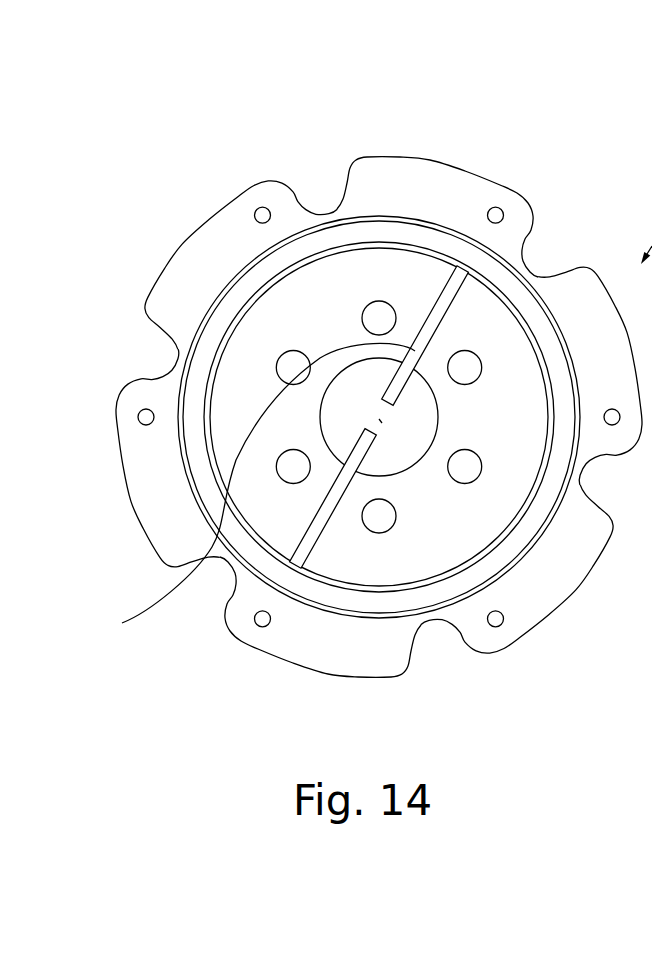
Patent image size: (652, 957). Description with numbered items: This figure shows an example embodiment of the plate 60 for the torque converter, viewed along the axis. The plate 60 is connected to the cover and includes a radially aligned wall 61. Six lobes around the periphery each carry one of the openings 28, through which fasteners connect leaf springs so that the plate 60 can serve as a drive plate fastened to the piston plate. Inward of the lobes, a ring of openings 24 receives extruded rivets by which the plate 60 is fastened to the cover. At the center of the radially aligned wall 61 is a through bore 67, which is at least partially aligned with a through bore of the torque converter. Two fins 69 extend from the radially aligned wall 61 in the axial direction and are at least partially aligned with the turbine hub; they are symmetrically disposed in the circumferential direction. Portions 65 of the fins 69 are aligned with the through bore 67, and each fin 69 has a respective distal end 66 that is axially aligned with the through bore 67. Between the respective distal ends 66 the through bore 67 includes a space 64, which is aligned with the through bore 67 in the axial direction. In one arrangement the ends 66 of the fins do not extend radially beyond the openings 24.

The plate 60 is at (139, 125).
The openings 28 is at (261, 208).
The radially aligned wall 61 is at (277, 303).
The openings 24 is at (381, 315).
The portions of the fins 65 is at (381, 421).
The distal end 66 is at (388, 405).
The space 64 is at (365, 427).
The through bore 67 is at (381, 421).
The fins 69 is at (220, 557).